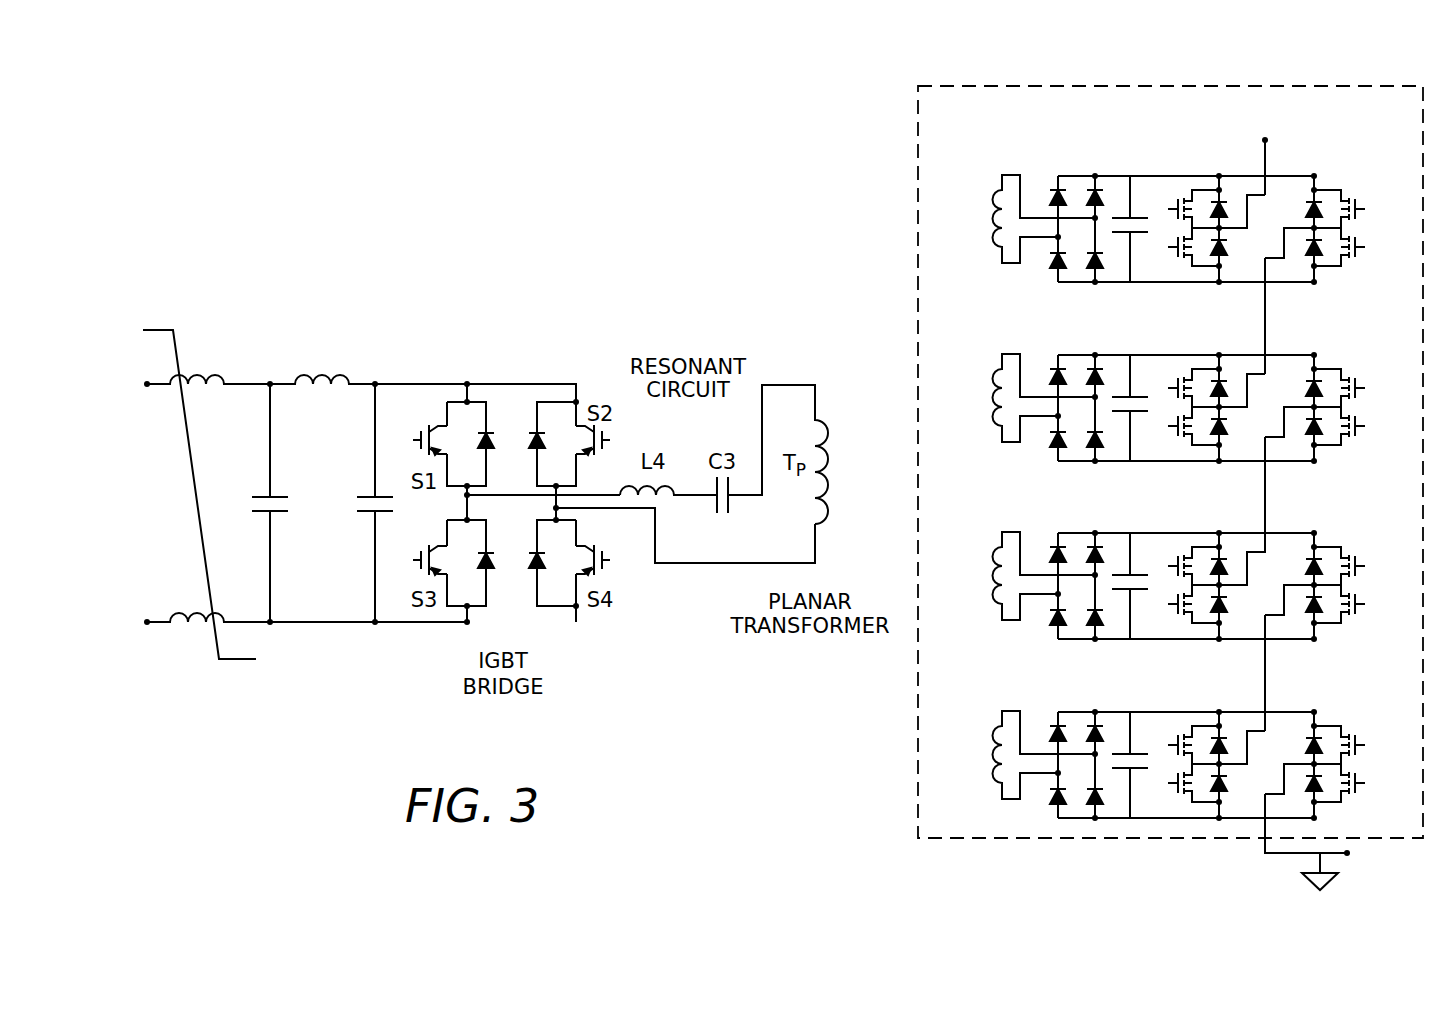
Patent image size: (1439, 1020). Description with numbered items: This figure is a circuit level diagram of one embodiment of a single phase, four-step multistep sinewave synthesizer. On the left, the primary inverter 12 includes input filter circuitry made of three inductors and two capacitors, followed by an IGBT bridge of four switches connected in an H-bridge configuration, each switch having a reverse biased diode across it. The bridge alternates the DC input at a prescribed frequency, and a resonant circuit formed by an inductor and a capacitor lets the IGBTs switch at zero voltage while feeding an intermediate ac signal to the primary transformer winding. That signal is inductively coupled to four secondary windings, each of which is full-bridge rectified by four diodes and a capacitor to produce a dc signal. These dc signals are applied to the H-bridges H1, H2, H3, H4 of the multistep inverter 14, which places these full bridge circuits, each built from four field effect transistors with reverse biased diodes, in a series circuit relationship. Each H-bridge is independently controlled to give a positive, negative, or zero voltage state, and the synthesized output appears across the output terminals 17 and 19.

The primary inverter 12 is at (294, 317).
The multistep inverter 14 is at (873, 140).
The output terminal 17 is at (1265, 154).
The output terminal 19 is at (1324, 842).
The H-bridge H1 is at (1326, 165).
The H-bridge H2 is at (1326, 344).
The H-bridge H3 is at (1326, 522).
The H-bridge H4 is at (1326, 701).